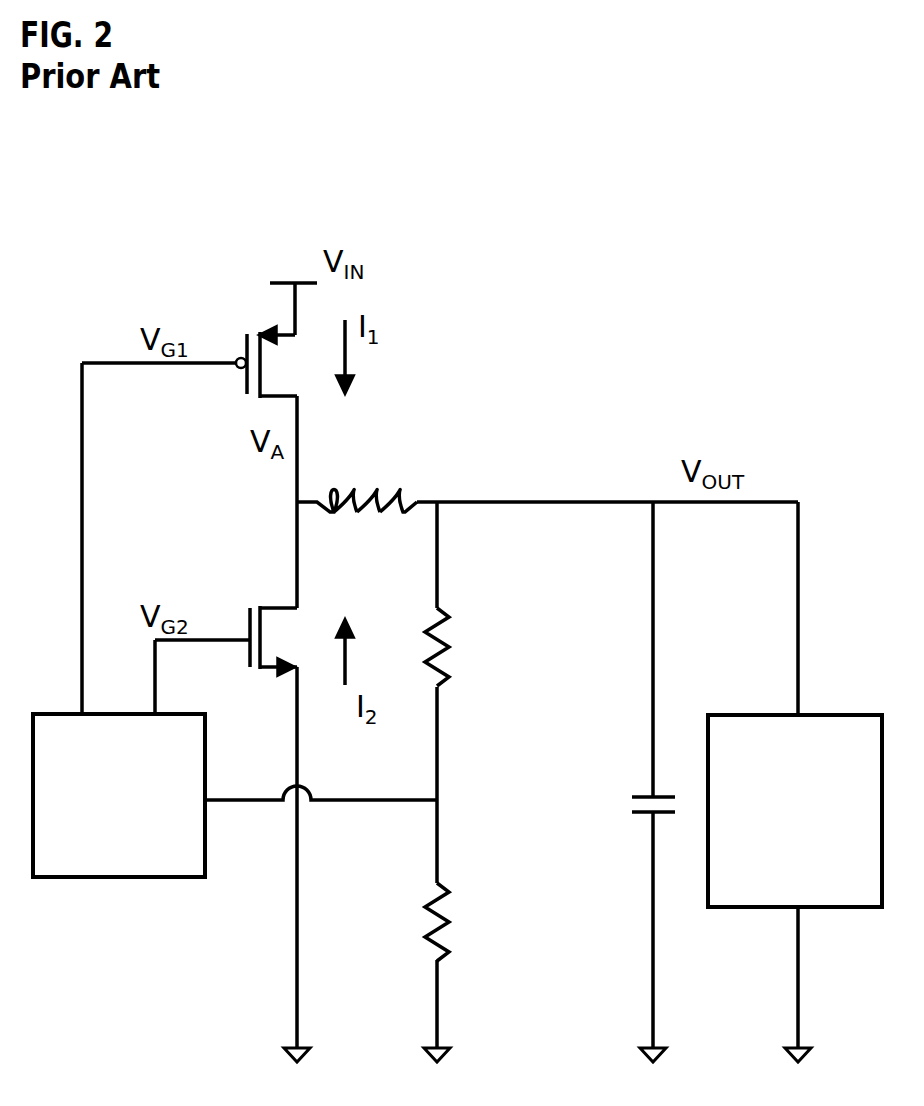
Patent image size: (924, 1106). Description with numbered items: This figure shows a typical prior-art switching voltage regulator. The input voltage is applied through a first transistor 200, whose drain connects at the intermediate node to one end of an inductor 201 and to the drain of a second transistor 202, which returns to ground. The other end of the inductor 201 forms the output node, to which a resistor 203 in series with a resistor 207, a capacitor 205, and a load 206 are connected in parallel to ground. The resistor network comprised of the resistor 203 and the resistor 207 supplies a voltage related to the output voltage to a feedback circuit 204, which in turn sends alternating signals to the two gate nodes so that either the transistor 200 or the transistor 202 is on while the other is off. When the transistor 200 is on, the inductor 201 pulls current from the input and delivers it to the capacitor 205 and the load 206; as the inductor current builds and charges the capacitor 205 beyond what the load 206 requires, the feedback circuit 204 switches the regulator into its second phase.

The transistor 200 is at (245, 322).
The inductor 201 is at (462, 420).
The transistor 202 is at (250, 608).
The resistor 203 is at (455, 643).
The feedback circuit 204 is at (95, 852).
The capacitor 205 is at (615, 800).
The load 206 is at (770, 843).
The resistor 207 is at (468, 930).